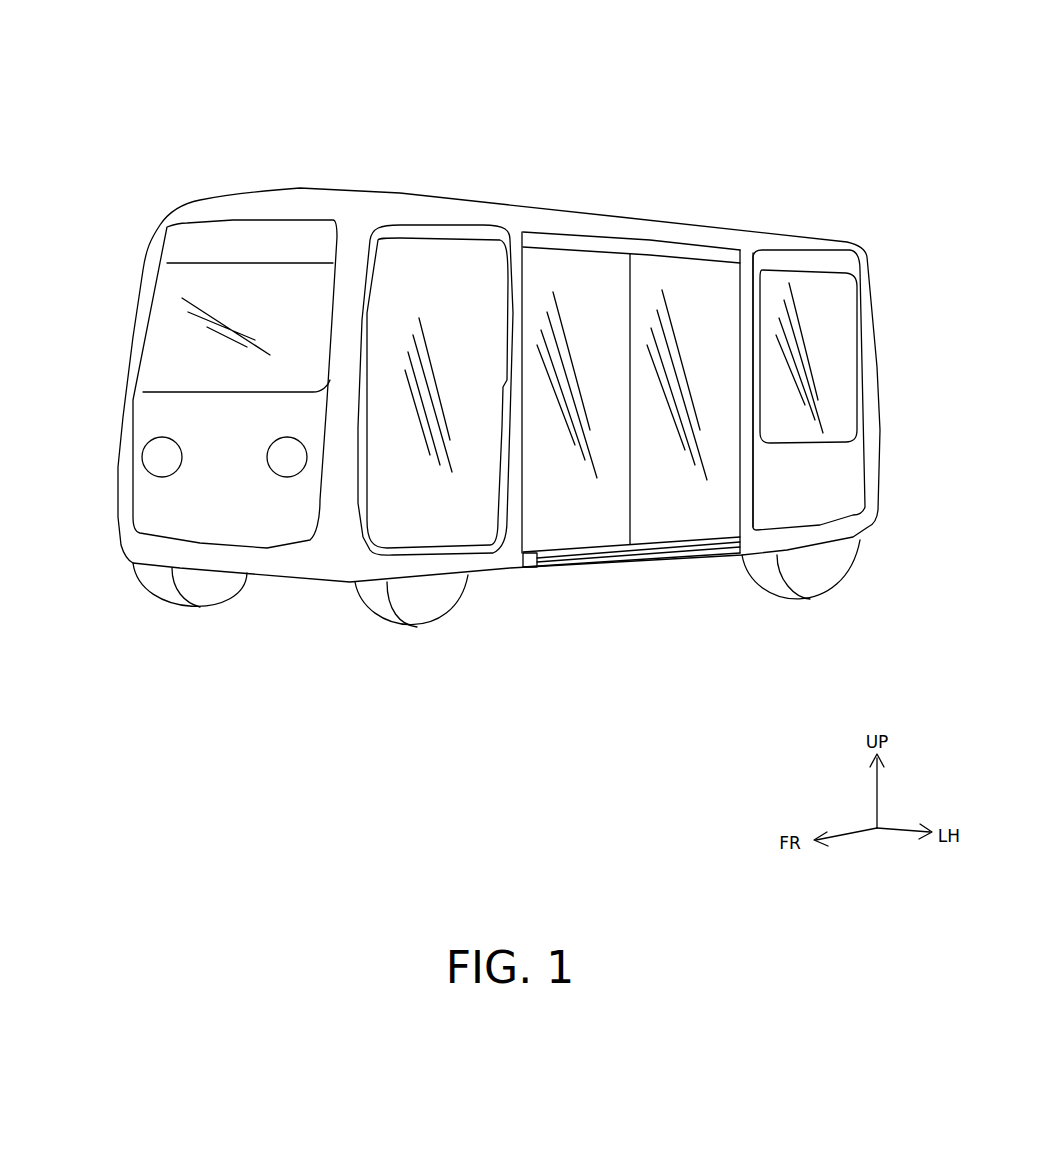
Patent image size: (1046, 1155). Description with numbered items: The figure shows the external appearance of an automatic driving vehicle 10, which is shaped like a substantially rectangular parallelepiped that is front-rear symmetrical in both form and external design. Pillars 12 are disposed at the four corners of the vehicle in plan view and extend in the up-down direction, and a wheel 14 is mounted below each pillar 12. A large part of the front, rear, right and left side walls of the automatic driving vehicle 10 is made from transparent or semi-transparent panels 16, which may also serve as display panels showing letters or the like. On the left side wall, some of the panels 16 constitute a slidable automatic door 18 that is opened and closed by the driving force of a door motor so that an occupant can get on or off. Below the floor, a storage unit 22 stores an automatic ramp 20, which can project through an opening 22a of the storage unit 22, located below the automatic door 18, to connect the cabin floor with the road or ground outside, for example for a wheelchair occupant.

The automatic driving vehicle 10 is at (592, 101).
The pillar 12 is at (143, 272).
The wheel 14 is at (198, 595).
The panel 16 is at (203, 353).
The automatic door 18 is at (697, 323).
The automatic ramp 20 is at (720, 567).
The storage unit 22 is at (532, 568).
The opening 22a is at (603, 562).